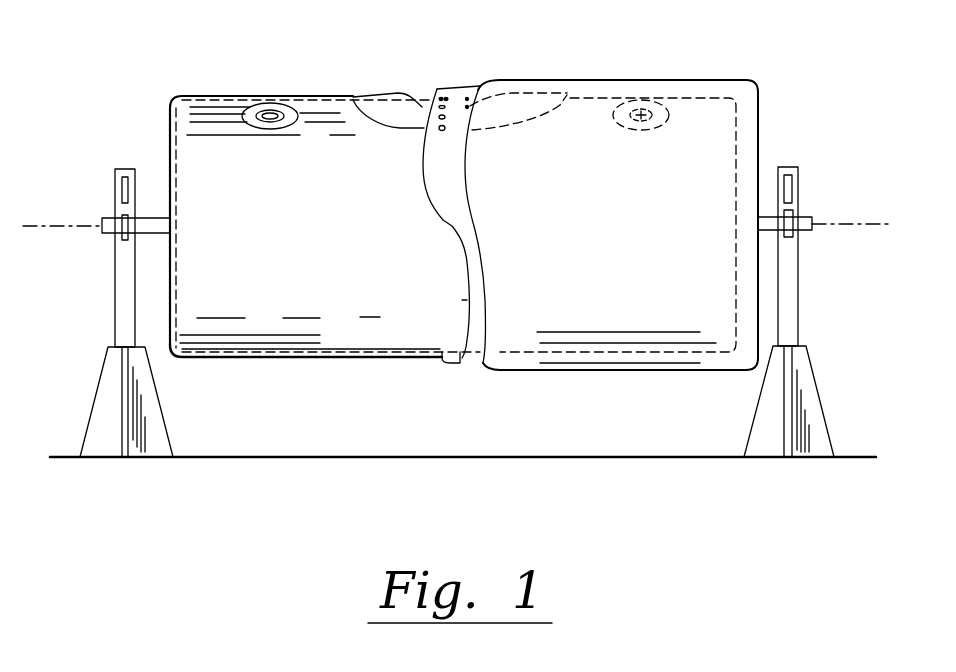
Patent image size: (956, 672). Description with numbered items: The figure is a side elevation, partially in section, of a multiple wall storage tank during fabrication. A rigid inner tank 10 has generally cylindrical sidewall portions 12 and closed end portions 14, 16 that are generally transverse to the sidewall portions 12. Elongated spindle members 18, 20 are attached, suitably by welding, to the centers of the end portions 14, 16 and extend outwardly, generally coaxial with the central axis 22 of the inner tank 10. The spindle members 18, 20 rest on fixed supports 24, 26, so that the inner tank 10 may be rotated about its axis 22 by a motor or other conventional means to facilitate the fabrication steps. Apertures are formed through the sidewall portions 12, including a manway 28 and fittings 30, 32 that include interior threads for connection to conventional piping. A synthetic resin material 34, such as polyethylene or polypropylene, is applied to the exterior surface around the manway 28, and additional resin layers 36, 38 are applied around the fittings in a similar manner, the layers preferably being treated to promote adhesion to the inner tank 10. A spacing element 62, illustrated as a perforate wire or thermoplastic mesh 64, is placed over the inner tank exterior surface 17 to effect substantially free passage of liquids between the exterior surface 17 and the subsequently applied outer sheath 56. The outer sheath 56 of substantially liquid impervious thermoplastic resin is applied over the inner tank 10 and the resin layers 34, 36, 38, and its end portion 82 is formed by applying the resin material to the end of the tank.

The inner tank 10 is at (150, 44).
The sidewall portions 12 is at (337, 356).
The end portion 14 is at (170, 125).
The end portion 16 is at (740, 130).
The inner tank exterior surface 17 is at (260, 334).
The spindle member 18 is at (108, 223).
The spindle member 20 is at (808, 218).
The central axis 22 is at (841, 226).
The fixed support 24 is at (123, 296).
The fixed support 26 is at (798, 302).
The manway 28 is at (410, 97).
The fitting 30 is at (272, 104).
The fitting 32 is at (649, 95).
The synthetic resin material layer 34 is at (377, 110).
The resin layer 36 is at (262, 128).
The resin layer 38 is at (672, 98).
The outer sheath 56 is at (621, 372).
The spacing element 62 is at (462, 373).
The mesh 64 is at (468, 328).
The end portion of outer sheath 82 is at (762, 88).